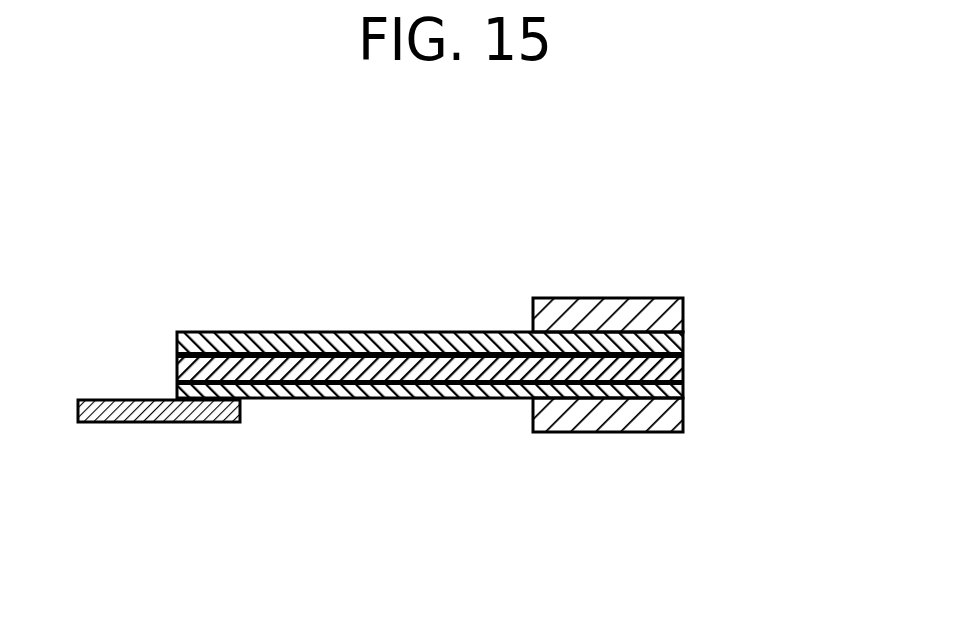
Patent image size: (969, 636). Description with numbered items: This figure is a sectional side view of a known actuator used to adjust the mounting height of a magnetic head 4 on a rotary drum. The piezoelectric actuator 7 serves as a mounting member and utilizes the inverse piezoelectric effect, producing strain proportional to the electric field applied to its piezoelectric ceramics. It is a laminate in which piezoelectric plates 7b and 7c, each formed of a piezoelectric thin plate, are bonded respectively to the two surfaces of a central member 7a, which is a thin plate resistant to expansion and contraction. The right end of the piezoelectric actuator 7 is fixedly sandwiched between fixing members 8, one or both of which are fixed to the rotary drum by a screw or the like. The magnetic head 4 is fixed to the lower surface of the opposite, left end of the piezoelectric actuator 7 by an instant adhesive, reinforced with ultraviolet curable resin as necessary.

The magnetic head 4 is at (150, 422).
The piezoelectric actuator 7 is at (505, 346).
The central member 7a is at (363, 398).
The piezoelectric plate 7b is at (360, 332).
The piezoelectric plate 7c is at (683, 367).
The fixing members 8 is at (605, 298).